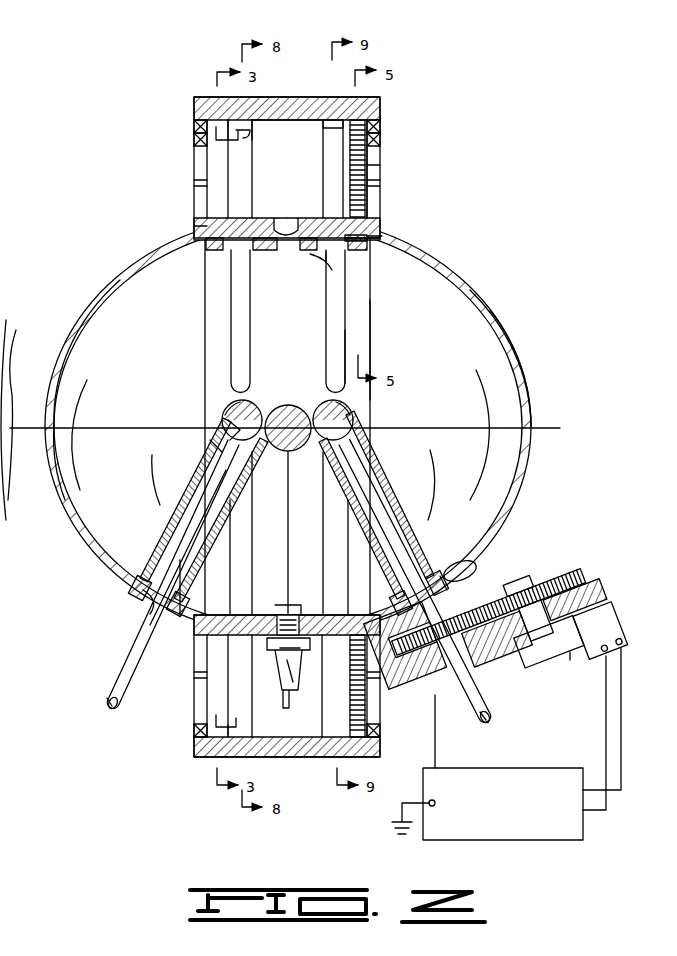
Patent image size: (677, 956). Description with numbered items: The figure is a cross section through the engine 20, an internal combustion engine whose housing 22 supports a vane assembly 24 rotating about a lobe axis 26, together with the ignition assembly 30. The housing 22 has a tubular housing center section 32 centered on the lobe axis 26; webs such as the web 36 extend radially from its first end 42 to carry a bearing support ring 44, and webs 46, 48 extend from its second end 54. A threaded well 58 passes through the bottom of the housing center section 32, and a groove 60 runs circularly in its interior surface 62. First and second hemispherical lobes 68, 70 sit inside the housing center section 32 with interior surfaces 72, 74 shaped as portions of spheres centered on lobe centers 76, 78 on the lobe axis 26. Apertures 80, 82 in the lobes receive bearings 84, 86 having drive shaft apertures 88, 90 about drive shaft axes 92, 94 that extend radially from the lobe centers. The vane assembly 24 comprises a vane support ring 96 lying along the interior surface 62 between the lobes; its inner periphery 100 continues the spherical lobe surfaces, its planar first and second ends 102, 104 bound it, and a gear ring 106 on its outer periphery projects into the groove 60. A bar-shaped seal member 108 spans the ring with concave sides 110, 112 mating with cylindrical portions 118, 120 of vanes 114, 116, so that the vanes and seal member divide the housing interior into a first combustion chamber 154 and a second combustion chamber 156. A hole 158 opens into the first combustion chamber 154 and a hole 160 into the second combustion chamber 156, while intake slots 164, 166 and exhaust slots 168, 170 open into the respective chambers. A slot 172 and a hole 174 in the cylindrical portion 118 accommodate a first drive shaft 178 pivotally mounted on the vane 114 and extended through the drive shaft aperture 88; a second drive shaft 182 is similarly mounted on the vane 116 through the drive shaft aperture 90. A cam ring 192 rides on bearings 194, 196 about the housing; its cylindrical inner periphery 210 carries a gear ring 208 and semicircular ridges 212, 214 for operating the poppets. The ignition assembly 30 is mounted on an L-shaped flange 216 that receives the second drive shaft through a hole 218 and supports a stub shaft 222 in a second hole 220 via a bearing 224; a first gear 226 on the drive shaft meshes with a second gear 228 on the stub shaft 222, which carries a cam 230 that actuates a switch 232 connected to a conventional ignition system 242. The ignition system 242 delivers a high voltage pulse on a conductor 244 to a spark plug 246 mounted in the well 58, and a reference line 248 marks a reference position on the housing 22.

The internal combustion engine 20 is at (498, 153).
The housing 22 is at (486, 300).
The vane assembly 24 is at (420, 498).
The lobe axis 26 is at (546, 428).
The ignition assembly 30 is at (573, 838).
The housing center section 32 is at (300, 218).
The web 36 is at (195, 170).
The first end of housing center section 42 is at (194, 232).
The bearing support ring 44 is at (195, 133).
The web 46 is at (380, 130).
The web 48 is at (380, 178).
The second end of housing center section 54 is at (384, 236).
The threaded well 58 is at (262, 650).
The groove 60 is at (376, 239).
The interior surface of housing center section 62 is at (312, 256).
The first hemispherical lobe 68 is at (100, 292).
The second hemispherical lobe 70 is at (500, 308).
The interior surface of first lobe 72 is at (95, 435).
The interior surface of second lobe 74 is at (469, 435).
The lobe center 76 is at (232, 418).
The lobe center 78 is at (350, 420).
The aperture 80 is at (148, 596).
The aperture 82 is at (468, 568).
The bearing 84 is at (136, 586).
The bearing 86 is at (455, 578).
The drive shaft aperture 88 is at (160, 610).
The drive shaft aperture 90 is at (415, 558).
The drive shaft axis 92 is at (108, 704).
The drive shaft axis 94 is at (490, 742).
The vane support ring 96 is at (358, 345).
The inner periphery of vane support ring 100 is at (330, 262).
The first end of vane support ring 102 is at (205, 296).
The second end of vane support ring 104 is at (372, 338).
The gear ring 106 is at (380, 226).
The seal member 108 is at (290, 405).
The concave side 110 is at (252, 445).
The concave side 112 is at (318, 456).
The vane 114 is at (165, 530).
The vane 116 is at (392, 472).
The cylindrical portion 118 is at (238, 405).
The cylindrical portion 120 is at (345, 405).
The first combustion chamber 154 is at (185, 600).
The second combustion chamber 156 is at (100, 355).
The hole 158 is at (300, 598).
The hole 160 is at (193, 229).
The intake slot 164 is at (412, 520).
The intake slot 166 is at (343, 323).
The exhaust slot 168 is at (205, 510).
The exhaust slot 170 is at (232, 322).
The slot 172 is at (215, 446).
The hole 174 is at (229, 425).
The first drive shaft 178 is at (122, 656).
The second drive shaft 182 is at (476, 722).
The cam ring 192 is at (380, 100).
The bearing 194 is at (194, 127).
The bearing 196 is at (380, 122).
The gear ring 208 is at (366, 164).
The inner periphery of cam ring 210 is at (280, 120).
The semicircular ridge 212 is at (332, 125).
The semicircular ridge 214 is at (255, 128).
The L-shaped flange 216 is at (585, 585).
The hole 218 is at (460, 680).
The second hole 220 is at (598, 600).
The stub shaft 222 is at (608, 622).
The bearing 224 is at (528, 664).
The first gear 226 is at (438, 686).
The second gear 228 is at (545, 578).
The cam 230 is at (572, 660).
The switch 232 is at (608, 655).
The ignition system 242 is at (455, 830).
The conductor 244 is at (330, 705).
The spark plug 246 is at (296, 672).
The reference line 248 is at (40, 397).